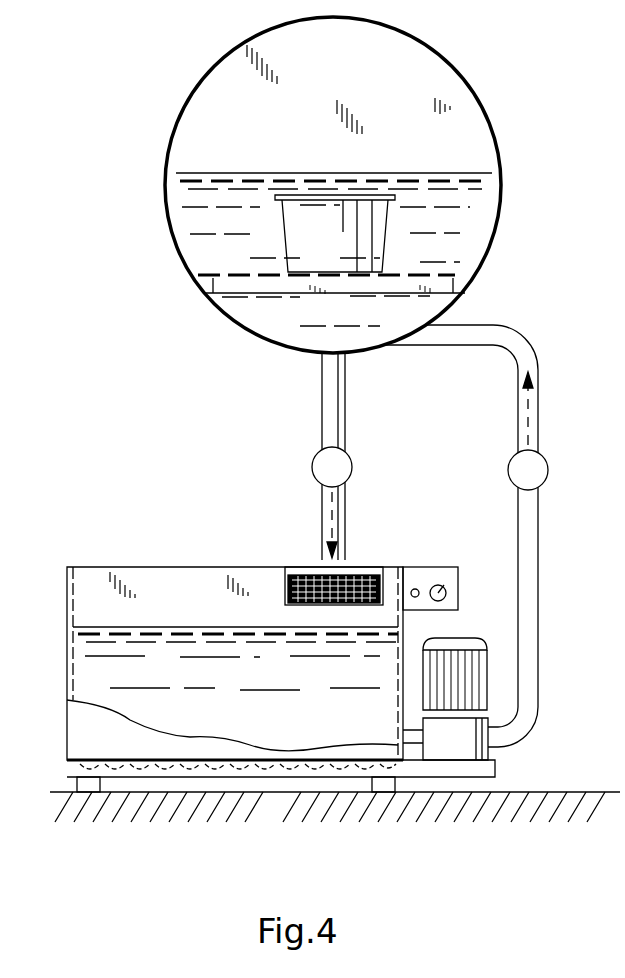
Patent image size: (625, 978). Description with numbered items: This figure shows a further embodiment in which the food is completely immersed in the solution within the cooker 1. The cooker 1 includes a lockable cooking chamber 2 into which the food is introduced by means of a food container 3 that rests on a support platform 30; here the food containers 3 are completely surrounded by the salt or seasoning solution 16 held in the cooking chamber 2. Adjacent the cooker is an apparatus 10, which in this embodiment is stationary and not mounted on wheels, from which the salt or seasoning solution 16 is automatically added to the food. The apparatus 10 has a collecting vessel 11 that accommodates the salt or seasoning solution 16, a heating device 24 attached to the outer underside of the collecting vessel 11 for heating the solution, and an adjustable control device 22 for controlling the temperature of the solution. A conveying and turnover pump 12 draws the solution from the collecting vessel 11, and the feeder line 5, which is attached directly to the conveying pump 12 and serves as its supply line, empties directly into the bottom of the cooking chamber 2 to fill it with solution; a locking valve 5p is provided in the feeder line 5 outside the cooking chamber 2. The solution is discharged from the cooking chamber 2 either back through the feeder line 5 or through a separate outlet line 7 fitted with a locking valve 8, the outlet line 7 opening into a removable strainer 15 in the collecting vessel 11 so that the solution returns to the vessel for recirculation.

The cooker 1 is at (492, 108).
The cooking chamber 2 is at (420, 55).
The food container 3 is at (345, 254).
The feeder line 5 is at (485, 330).
The locking valve 5p is at (542, 462).
The outlet line 7 is at (338, 395).
The locking valve 8 is at (348, 462).
The apparatus 10 is at (80, 562).
The collecting vessel 11 is at (67, 668).
The conveying and turnover pump 12 is at (482, 646).
The removable strainer 15 is at (362, 575).
The salt or seasoning solution 16 is at (457, 171).
The adjustable control device 22 is at (447, 590).
The heating device 24 is at (266, 766).
The support platform 30 is at (460, 270).